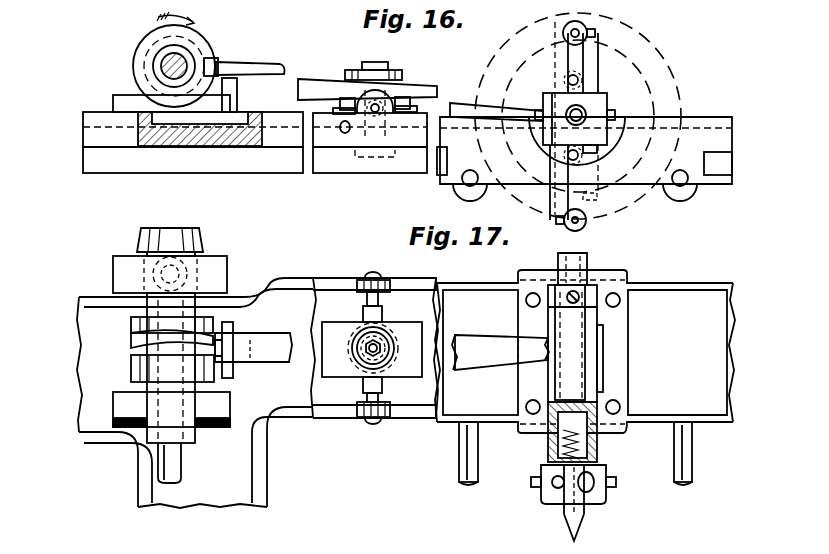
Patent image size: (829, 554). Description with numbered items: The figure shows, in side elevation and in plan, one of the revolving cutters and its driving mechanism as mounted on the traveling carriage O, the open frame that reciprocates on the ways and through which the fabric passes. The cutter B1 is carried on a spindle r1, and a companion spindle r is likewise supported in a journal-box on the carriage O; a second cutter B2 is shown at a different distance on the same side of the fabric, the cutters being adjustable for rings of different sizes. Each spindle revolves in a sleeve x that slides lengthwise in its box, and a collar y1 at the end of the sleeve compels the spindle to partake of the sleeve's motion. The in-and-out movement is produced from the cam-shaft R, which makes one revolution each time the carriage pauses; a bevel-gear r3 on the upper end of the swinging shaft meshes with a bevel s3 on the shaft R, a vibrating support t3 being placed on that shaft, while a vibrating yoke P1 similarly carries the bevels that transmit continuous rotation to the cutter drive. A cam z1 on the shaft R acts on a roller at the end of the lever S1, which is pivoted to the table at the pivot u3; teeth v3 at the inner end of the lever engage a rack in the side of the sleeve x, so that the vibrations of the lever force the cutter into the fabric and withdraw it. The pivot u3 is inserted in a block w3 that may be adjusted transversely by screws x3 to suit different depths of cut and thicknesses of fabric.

In FIG. 16, the cam z1 is at (140, 58).
In FIG. 17, the cam z1 is at (162, 349).
In FIG. 16, the cam-shaft R is at (163, 68).
In FIG. 17, the cam-shaft R is at (180, 460).
In FIG. 16, the lever S1 is at (322, 80).
In FIG. 17, the lever S1 is at (277, 340).
In FIG. 16, the block w3 is at (340, 103).
In FIG. 16, the pivot u3 is at (392, 81).
In FIG. 17, the pivot u3 is at (368, 343).
In FIG. 16, the bevel-gear r3 is at (380, 114).
In FIG. 17, the bevel-gear r3 is at (145, 256).
In FIG. 16, the cutter B2 is at (590, 33).
In FIG. 16, the vibrating yoke P1 is at (580, 80).
In FIG. 16, the spindle r is at (607, 97).
In FIG. 16, the revolving cutter B1 is at (586, 227).
In FIG. 17, the revolving cutter B1 is at (575, 503).
In FIG. 17, the bevel s3 is at (190, 240).
In FIG. 17, the vibrating support t3 is at (120, 277).
In FIG. 17, the screws x3 is at (362, 285).
In FIG. 17, the spindle r1 is at (562, 263).
In FIG. 17, the collar y1 is at (598, 290).
In FIG. 17, the sleeve x is at (575, 373).
In FIG. 17, the teeth v3 is at (546, 355).
In FIG. 17, the traveling carriage O is at (677, 352).